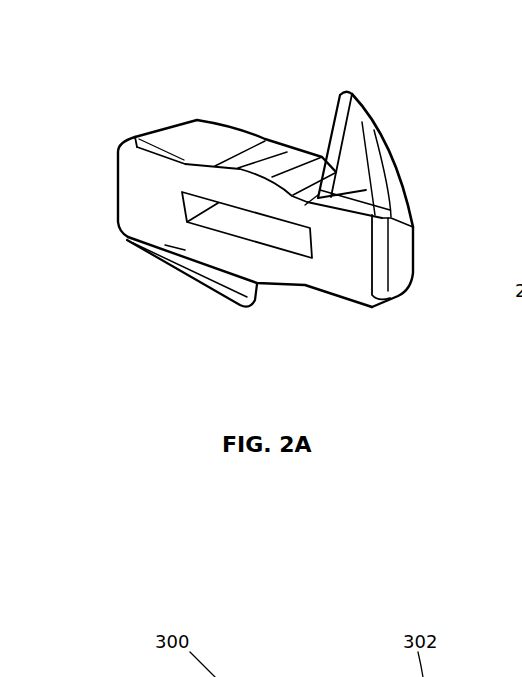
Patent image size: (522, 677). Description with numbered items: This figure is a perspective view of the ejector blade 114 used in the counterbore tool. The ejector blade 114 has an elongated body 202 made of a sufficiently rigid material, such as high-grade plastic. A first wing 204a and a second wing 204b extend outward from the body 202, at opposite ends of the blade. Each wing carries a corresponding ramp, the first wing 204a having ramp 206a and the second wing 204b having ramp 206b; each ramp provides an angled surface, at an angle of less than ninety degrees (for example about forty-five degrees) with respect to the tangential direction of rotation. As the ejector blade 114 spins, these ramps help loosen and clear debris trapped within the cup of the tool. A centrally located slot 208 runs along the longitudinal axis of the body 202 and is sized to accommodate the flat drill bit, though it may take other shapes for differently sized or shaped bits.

The ejector blade 114 is at (157, 106).
The body 202 is at (280, 147).
The first wing 204a is at (402, 215).
The second wing 204b is at (118, 222).
The ramp 206a is at (357, 121).
The ramp 206b is at (222, 292).
The slot 208 is at (268, 247).